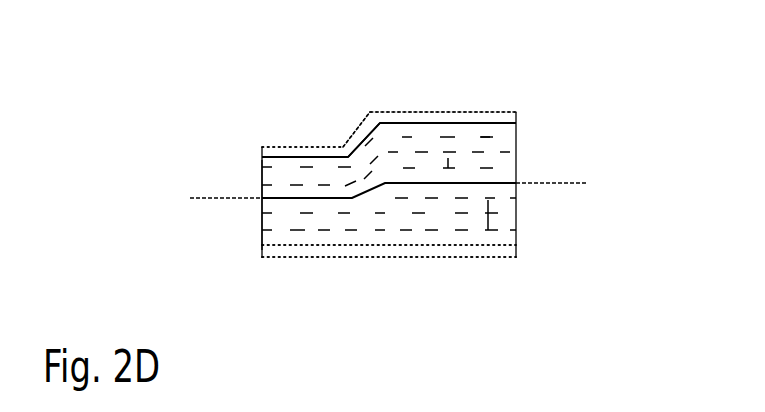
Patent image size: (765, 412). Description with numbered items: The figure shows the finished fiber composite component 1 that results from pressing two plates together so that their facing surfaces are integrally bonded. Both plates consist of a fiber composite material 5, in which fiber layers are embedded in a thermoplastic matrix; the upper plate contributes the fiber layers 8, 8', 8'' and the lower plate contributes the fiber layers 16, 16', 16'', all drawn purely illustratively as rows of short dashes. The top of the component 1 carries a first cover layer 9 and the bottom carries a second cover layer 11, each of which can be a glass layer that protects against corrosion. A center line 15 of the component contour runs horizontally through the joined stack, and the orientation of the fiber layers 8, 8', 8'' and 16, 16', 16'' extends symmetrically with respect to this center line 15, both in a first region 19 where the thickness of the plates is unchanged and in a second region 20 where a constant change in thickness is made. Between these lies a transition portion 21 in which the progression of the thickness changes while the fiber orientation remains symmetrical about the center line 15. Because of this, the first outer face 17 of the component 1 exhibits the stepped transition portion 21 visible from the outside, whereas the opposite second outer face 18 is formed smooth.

The component 1 is at (549, 127).
The fiber composite material 5 is at (262, 222).
The fiber layer 8 is at (454, 116).
The fiber layer 8' is at (479, 95).
The fiber layer 8'' is at (496, 94).
The first cover layer 9 is at (292, 147).
The second cover layer 11 is at (292, 258).
The center line 15 is at (560, 184).
The fiber layer 16 is at (488, 257).
The fiber layer 16' is at (455, 264).
The fiber layer 16'' is at (404, 273).
The first outer face 17 is at (407, 75).
The second outer face 18 is at (346, 285).
The first region 19 is at (440, 84).
The second region 20 is at (322, 115).
The transition portion 21 is at (361, 94).